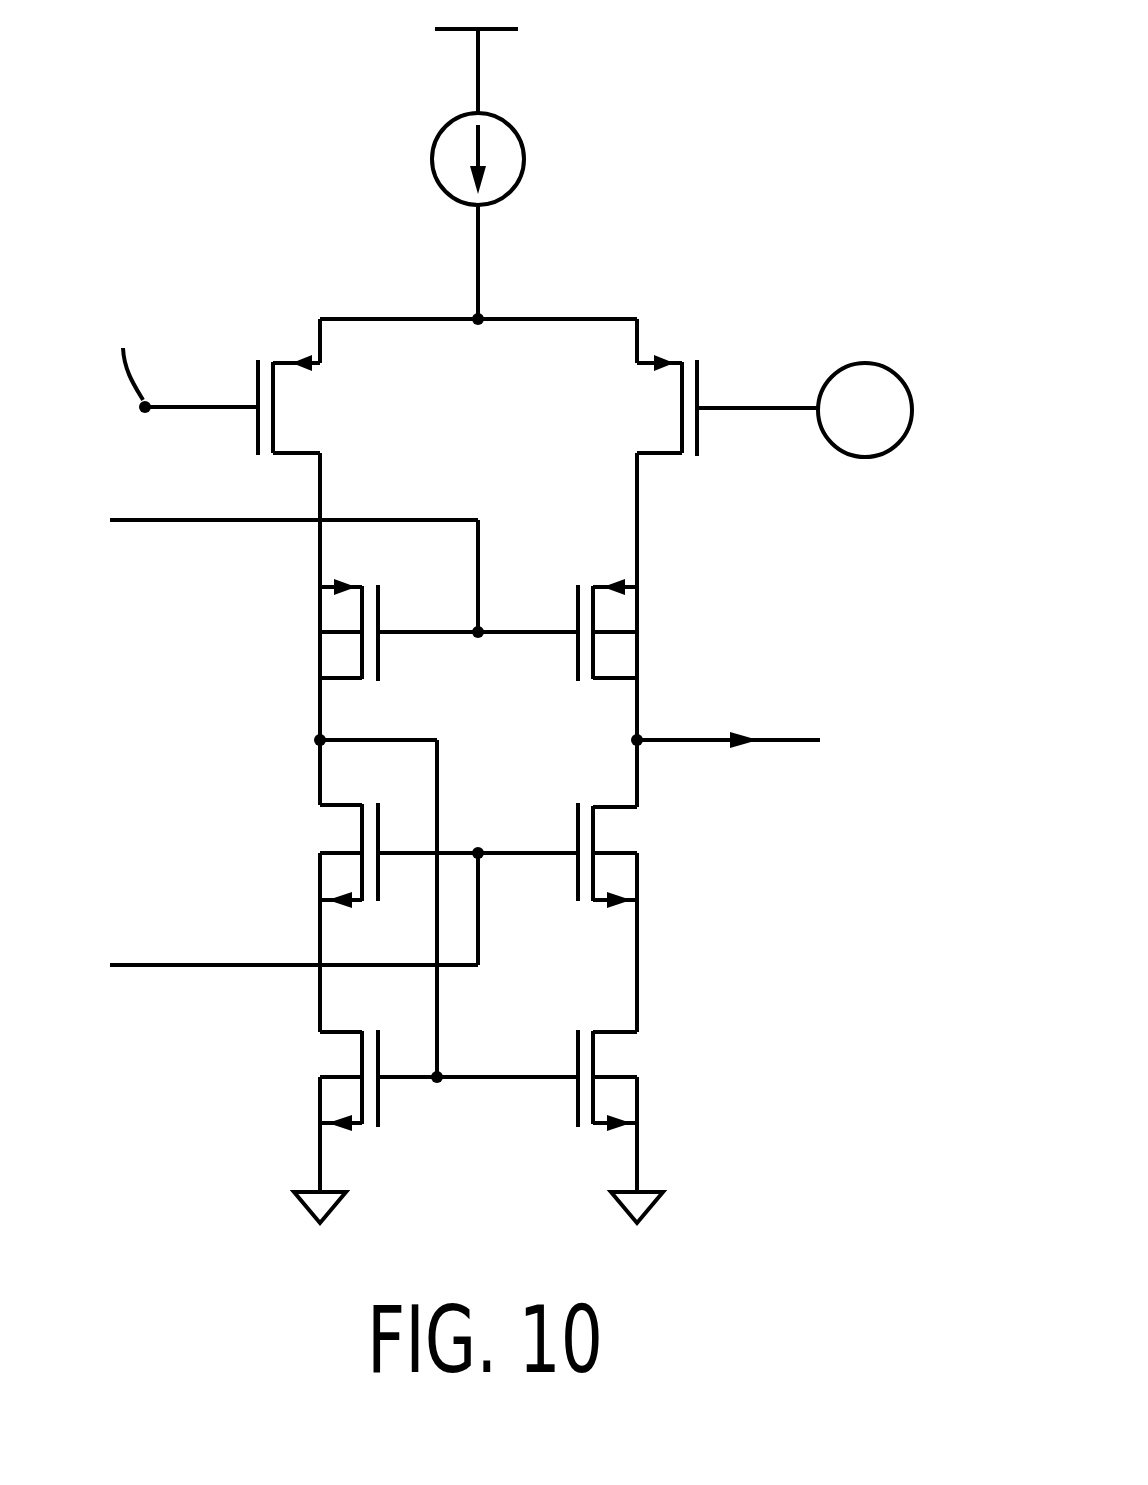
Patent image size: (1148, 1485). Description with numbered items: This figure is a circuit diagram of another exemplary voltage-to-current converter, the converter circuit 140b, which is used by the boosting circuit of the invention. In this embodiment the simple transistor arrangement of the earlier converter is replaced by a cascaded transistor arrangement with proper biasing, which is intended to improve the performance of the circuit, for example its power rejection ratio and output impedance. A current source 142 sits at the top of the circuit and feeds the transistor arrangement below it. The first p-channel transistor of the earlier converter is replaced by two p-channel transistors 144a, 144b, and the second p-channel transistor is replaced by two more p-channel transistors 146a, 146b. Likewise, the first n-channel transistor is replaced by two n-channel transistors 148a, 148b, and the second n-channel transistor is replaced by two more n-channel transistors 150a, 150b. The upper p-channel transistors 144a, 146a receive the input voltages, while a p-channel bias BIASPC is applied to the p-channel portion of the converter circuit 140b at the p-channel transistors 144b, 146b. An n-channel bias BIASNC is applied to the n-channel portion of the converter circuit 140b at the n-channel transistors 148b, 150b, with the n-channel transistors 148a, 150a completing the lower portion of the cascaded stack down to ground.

The converter circuit 140b is at (812, 128).
The current source 142 is at (524, 160).
The p-channel transistor 144a is at (322, 387).
The p-channel transistor 146a is at (637, 385).
The p-channel transistor 144b is at (320, 608).
The p-channel transistor 146b is at (640, 610).
The n-channel transistor 148b is at (320, 807).
The n-channel transistor 150b is at (640, 807).
The n-channel transistor 148a is at (320, 1032).
The n-channel transistor 150a is at (640, 1032).